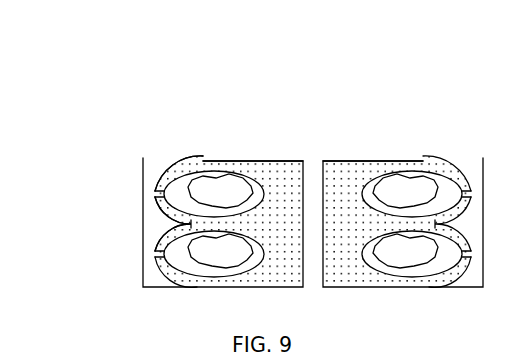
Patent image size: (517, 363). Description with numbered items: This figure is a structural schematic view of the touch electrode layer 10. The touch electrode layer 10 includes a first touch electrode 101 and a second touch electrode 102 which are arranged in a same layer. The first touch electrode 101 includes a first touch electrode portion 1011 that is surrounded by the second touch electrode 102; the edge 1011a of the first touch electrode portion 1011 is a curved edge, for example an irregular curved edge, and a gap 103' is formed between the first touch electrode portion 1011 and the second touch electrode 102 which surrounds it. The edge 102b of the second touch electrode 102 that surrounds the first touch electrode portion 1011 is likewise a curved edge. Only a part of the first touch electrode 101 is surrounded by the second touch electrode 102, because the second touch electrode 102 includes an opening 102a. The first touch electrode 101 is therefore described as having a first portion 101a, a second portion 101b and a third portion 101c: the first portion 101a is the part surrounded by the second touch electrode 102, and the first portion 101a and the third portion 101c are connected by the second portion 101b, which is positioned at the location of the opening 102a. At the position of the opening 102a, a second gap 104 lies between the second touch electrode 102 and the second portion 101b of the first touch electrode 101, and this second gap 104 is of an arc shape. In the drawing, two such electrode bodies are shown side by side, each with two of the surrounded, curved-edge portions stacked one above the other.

The touch electrode layer 10 is at (131, 36).
The first touch electrode 101 is at (199, 202).
The first portion 101a is at (213, 190).
The first touch electrode portion 1011 is at (177, 216).
The edge of the first touch electrode portion 1011a is at (253, 193).
The second portion 101b is at (167, 195).
The third portion 101c is at (139, 227).
The second touch electrode 102 is at (261, 168).
The gap 103' is at (253, 138).
The edge of the second touch electrode 102b is at (403, 170).
The second gap 104 is at (444, 191).
The opening 102a is at (452, 197).